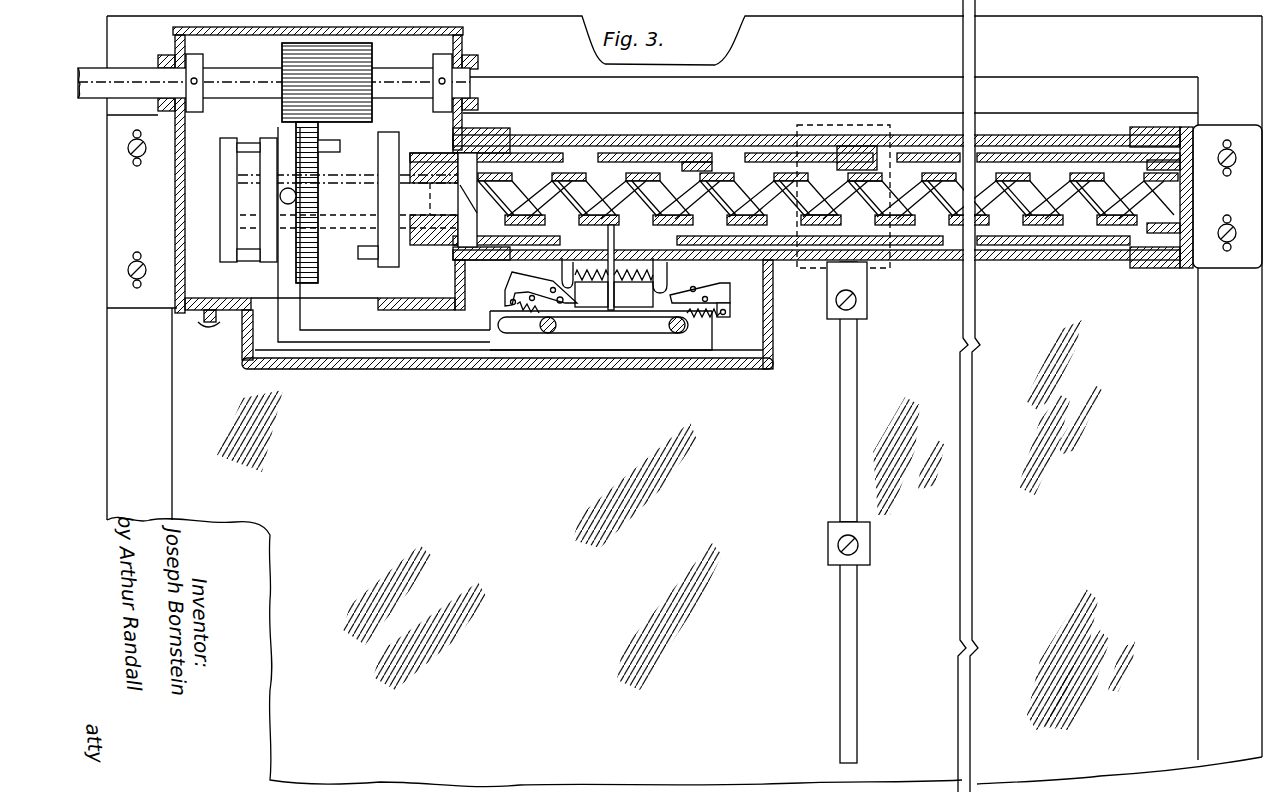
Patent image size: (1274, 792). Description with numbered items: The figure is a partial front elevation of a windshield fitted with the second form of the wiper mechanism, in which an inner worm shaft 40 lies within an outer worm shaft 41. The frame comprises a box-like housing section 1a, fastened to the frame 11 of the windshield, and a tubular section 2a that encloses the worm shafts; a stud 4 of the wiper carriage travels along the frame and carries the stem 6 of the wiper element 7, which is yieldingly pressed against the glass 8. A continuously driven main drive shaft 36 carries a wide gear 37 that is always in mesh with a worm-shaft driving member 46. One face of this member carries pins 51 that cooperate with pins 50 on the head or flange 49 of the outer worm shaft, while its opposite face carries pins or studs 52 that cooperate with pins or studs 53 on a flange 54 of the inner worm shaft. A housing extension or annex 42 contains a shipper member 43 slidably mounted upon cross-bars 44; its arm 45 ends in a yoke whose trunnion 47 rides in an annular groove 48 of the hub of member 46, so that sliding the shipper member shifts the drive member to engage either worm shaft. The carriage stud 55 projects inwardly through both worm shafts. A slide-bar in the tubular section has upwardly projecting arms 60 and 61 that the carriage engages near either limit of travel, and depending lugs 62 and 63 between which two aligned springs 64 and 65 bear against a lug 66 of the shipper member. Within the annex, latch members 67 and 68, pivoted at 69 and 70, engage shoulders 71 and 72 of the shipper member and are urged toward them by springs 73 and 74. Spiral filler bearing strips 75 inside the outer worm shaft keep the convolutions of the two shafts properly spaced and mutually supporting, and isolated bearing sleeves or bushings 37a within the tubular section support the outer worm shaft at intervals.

The housing section 1a is at (458, 46).
The tubular section 2a is at (696, 135).
The stud 4 is at (845, 125).
The stem 6 is at (843, 462).
The wiper element 7 is at (852, 653).
The glass 8 is at (534, 588).
The frame of the windshield 11 is at (1200, 470).
The main drive shaft 36 is at (391, 80).
The wide gear 37 is at (286, 53).
The bearing sleeves or bushings 37a is at (862, 235).
The inner worm shaft 40 is at (1052, 233).
The outer worm shaft 41 is at (1062, 155).
The housing extension or annex 42 is at (758, 372).
The shipper member 43 is at (603, 338).
The cross-bars 44 is at (548, 334).
The arm 45 is at (302, 326).
The worm-shaft driving member 46 is at (318, 280).
The trunnion 47 is at (290, 188).
The annular groove 48 is at (298, 190).
The head or flange 49 is at (394, 258).
The pins 50 is at (370, 259).
The pins 51 is at (340, 146).
The pins or studs 52 is at (255, 146).
The pins or studs 53 is at (253, 262).
The flange 54 is at (225, 240).
The stud 55 is at (816, 246).
The upwardly projecting arm 60 is at (523, 209).
The upwardly projecting arm 61 is at (1122, 137).
The depending lug 62 is at (562, 272).
The depending lug 63 is at (668, 274).
The spring 64 is at (591, 288).
The spring 65 is at (633, 288).
The lug 66 is at (610, 240).
The latch member 67 is at (506, 298).
The latch member 68 is at (731, 303).
The pivot 69 is at (563, 305).
The pivot 70 is at (706, 298).
The shoulder 71 is at (490, 314).
The shoulder 72 is at (714, 330).
The spring 73 is at (525, 312).
The spring 74 is at (704, 318).
The spiral filler bearing strips 75 is at (688, 162).